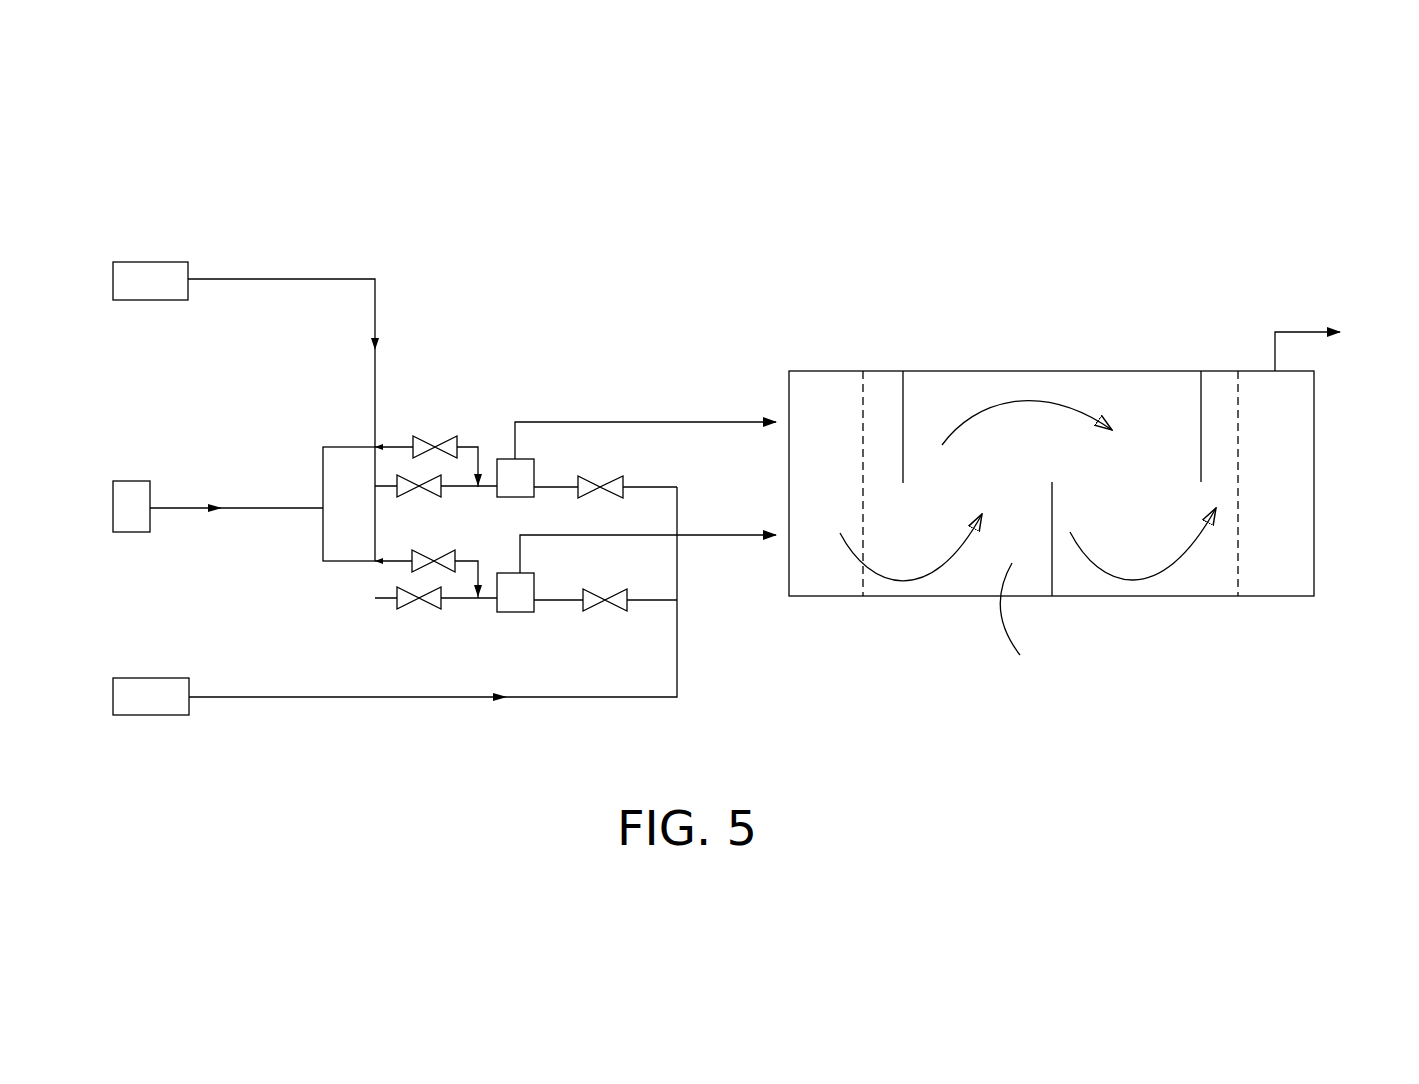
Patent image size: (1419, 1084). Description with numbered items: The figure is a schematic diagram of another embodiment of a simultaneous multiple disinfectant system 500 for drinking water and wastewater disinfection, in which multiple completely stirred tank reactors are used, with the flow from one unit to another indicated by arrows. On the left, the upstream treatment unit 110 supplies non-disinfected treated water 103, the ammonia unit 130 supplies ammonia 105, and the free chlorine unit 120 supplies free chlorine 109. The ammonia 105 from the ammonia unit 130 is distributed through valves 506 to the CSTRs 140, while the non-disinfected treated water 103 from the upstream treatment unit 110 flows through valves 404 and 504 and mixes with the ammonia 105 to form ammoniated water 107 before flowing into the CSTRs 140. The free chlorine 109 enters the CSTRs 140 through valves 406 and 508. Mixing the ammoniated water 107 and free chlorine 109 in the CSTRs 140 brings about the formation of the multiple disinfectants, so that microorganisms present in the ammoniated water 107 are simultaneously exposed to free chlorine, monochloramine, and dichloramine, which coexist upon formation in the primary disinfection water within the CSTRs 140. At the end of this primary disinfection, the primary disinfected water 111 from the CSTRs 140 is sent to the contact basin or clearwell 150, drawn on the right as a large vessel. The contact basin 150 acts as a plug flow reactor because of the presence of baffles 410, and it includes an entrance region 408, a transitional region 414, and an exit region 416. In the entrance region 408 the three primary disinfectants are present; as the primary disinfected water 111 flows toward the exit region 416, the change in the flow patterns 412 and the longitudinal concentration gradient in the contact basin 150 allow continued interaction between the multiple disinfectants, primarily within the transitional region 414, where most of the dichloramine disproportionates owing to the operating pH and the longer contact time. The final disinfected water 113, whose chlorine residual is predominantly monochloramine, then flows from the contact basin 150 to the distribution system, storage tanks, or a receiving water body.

The simultaneous multiple disinfectant (SMD) system 500 is at (640, 285).
The upstream treatment unit 110 is at (143, 262).
The non-disinfected treated water 103 is at (320, 279).
The ammonia unit 130 is at (123, 481).
The ammonia 105 is at (190, 508).
The free chlorine unit 120 is at (121, 678).
The free chlorine 109 is at (283, 697).
The valves 506 is at (413, 442).
The valve 504 is at (393, 492).
The valve 404 is at (398, 610).
The ammoniated water 107 is at (494, 456).
The completely stirred tank reactor (CSTR) 140 is at (538, 472).
The valve 508 is at (622, 476).
The valve 406 is at (590, 605).
The primary disinfected water 111 is at (601, 422).
The contact basin 150 is at (1330, 452).
The entrance region 408 is at (818, 388).
The exit region 416 is at (1260, 565).
The baffles 410 is at (905, 380).
The flow patterns 412 is at (1051, 392).
The transitional region 414 is at (1036, 619).
The final disinfected water 113 is at (1290, 332).